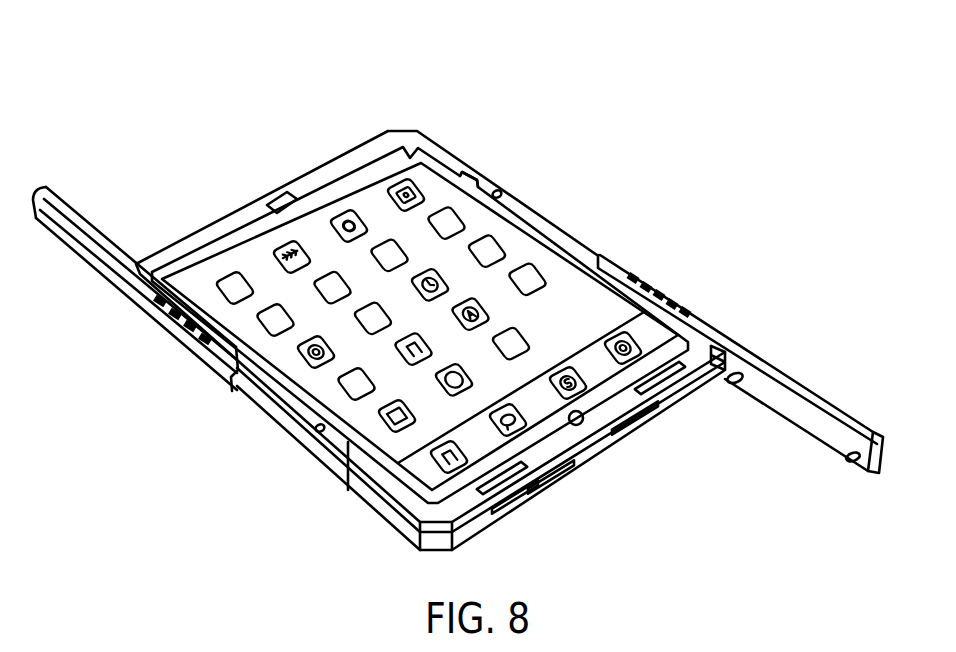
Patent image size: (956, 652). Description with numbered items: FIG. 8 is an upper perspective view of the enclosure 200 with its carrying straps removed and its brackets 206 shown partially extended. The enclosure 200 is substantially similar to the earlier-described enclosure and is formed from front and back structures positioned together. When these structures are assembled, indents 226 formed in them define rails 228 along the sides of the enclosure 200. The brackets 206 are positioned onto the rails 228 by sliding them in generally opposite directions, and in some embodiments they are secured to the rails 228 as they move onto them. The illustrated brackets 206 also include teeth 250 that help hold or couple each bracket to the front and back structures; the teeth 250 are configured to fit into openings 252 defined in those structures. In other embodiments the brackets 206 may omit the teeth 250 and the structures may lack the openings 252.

The enclosure 200 is at (301, 98).
The brackets 206 is at (88, 204).
The indents 226 is at (478, 179).
The rails 228 is at (572, 212).
The teeth 250 is at (733, 384).
The openings 252 is at (503, 193).